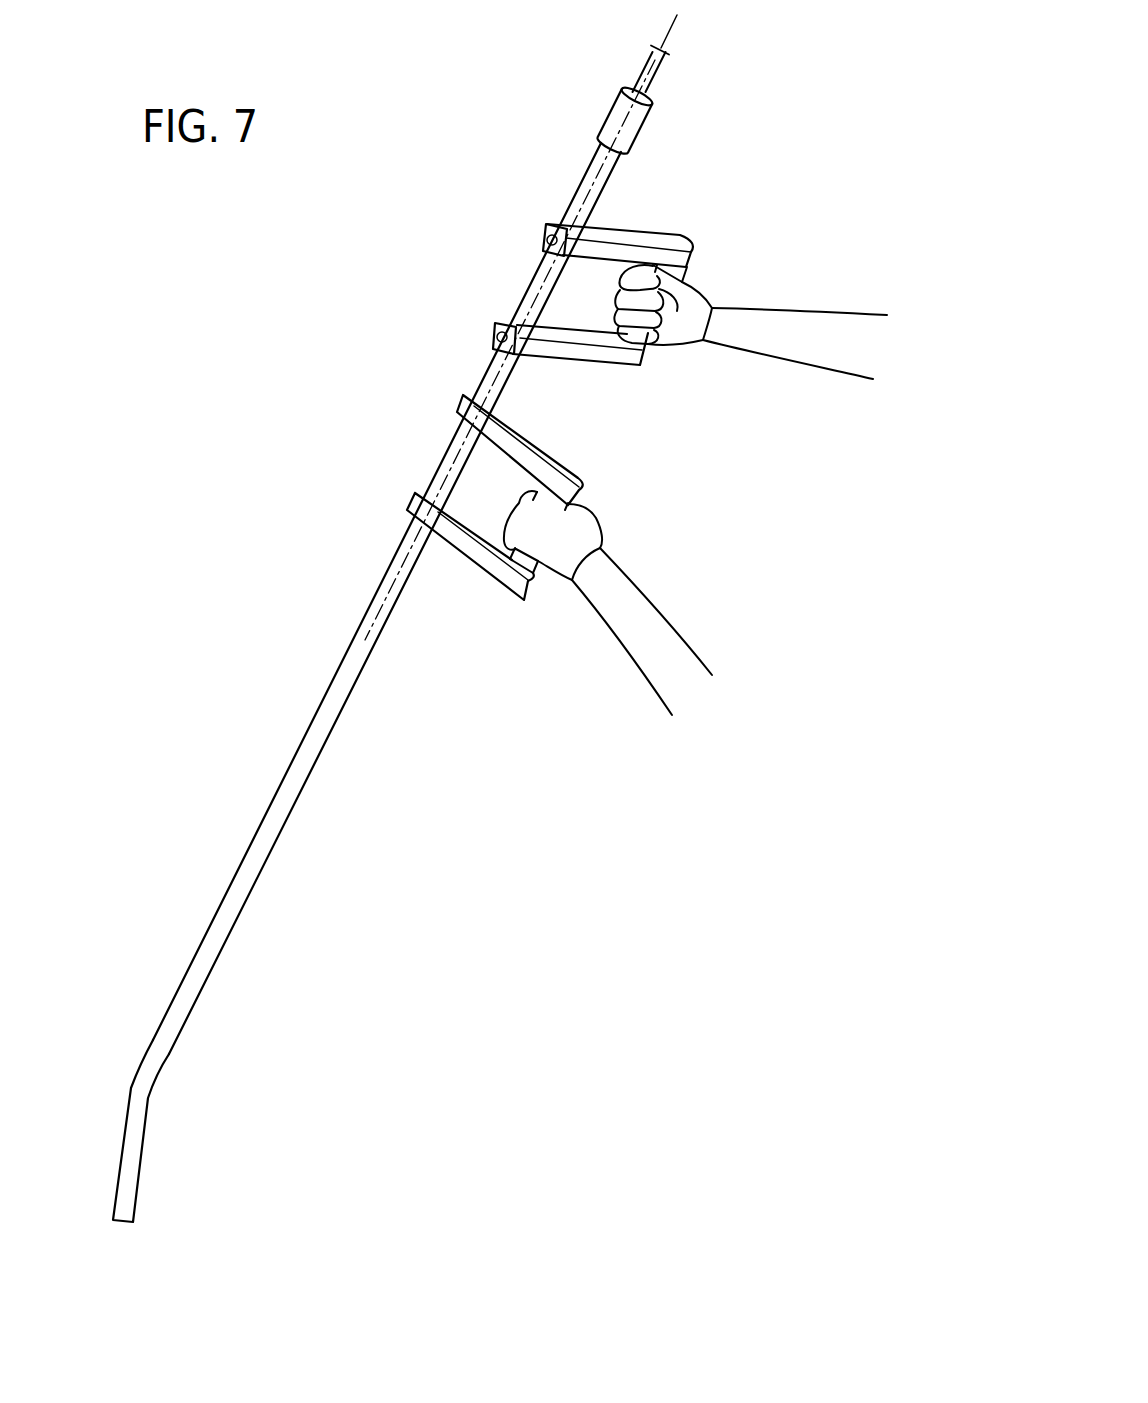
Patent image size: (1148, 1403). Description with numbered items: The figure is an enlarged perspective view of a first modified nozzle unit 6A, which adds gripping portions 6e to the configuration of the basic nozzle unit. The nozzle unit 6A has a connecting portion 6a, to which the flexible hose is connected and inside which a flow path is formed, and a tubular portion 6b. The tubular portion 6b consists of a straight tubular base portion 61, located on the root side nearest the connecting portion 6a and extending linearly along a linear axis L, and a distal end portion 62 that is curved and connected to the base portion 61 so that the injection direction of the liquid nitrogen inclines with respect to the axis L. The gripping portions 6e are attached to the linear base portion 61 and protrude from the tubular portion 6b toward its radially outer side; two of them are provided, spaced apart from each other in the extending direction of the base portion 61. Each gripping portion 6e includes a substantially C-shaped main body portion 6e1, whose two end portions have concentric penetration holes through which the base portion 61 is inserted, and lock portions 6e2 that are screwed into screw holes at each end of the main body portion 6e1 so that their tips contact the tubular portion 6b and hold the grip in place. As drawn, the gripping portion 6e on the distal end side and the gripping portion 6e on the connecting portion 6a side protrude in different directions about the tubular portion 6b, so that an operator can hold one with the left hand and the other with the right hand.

The nozzle unit 6A is at (512, 176).
The axis L is at (672, 33).
The connecting portion 6a is at (639, 121).
The tubular portion 6b is at (352, 633).
The base portion 61 is at (374, 674).
The distal end portion 62 is at (153, 1177).
The gripping portion 6e is at (722, 244).
The main body portion 6e1 is at (618, 238).
The lock portion 6e2 is at (544, 237).